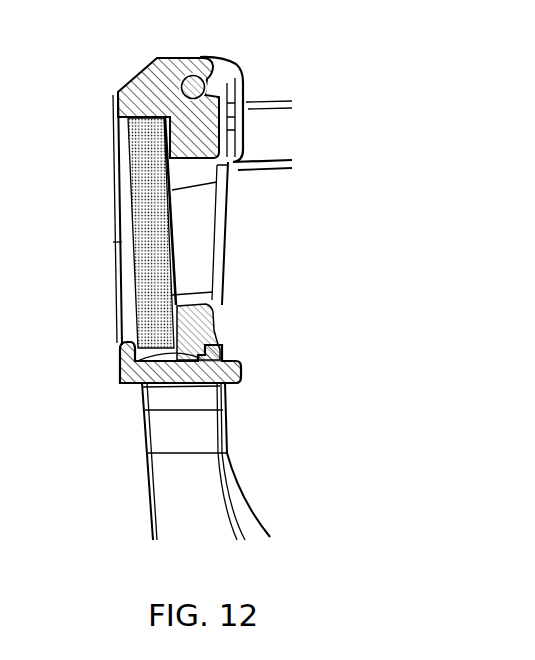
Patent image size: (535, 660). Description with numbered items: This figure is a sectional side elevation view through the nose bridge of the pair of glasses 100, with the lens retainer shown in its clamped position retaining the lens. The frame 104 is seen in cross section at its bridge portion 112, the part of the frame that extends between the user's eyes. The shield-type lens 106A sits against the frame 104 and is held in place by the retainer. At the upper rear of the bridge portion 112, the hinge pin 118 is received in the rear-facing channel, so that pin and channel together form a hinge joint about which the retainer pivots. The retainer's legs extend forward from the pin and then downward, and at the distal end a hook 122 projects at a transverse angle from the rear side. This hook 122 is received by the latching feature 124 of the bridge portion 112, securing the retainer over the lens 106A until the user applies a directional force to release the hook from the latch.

The pair of glasses 100 is at (353, 274).
The frame 104 is at (136, 84).
The shield-type lens 106A is at (130, 240).
The bridge portion 112 is at (218, 322).
The hinge pin 118 is at (226, 85).
The hook 122 is at (148, 390).
The latching feature 124 is at (208, 384).